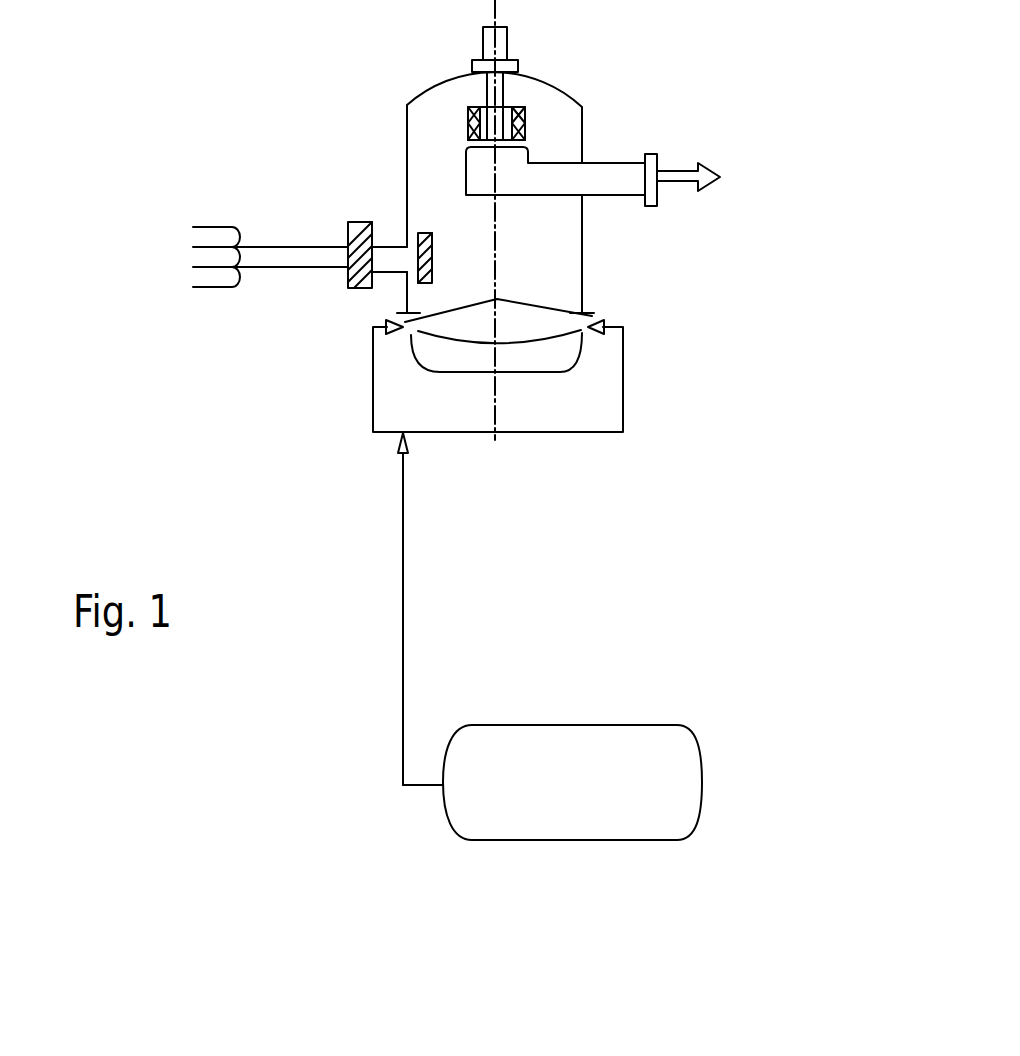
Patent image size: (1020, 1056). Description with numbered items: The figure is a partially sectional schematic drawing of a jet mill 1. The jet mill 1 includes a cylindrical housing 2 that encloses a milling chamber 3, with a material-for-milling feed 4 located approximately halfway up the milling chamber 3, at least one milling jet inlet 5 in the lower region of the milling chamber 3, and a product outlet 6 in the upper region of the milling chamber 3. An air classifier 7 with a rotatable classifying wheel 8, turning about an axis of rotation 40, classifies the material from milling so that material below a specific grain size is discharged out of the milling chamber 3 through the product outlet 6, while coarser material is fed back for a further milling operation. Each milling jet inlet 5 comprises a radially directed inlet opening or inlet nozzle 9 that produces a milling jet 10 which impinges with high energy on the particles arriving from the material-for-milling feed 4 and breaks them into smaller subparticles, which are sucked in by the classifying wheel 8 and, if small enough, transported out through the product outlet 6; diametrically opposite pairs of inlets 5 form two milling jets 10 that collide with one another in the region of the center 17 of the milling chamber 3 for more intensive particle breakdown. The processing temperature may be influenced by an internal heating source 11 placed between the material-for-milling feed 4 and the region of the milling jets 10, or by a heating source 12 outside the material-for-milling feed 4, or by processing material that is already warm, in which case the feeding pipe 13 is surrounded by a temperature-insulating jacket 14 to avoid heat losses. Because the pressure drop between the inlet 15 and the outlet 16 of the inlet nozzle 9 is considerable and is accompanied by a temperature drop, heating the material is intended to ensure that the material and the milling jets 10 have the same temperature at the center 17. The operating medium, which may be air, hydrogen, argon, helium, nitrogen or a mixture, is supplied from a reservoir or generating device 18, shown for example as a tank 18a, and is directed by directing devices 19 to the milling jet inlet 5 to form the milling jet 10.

The jet mill 1 is at (180, 100).
The cylindrical housing 2 is at (407, 132).
The milling chamber 3 is at (545, 262).
The material-for-milling feed 4 is at (306, 250).
The milling jet inlet 5 is at (336, 330).
The product outlet 6 is at (670, 157).
The air classifier 7 is at (537, 128).
The classifying wheel 8 is at (477, 107).
The inlet nozzle 9 is at (430, 350).
The milling jet 10 is at (478, 340).
The internal heating source 11 is at (425, 233).
The heating source 12 is at (350, 225).
The feeding pipe 13 is at (258, 258).
The temperature-insulating jacket 14 is at (207, 238).
The inlet of the inlet nozzle 15 is at (405, 338).
The outlet of the inlet nozzle 16 is at (421, 324).
The center of the milling chamber 17 is at (507, 268).
The reservoir or generating device 18 is at (657, 815).
The tank 18a is at (637, 750).
The directing devices 19 is at (380, 432).
The axis of rotation 40 is at (497, 16).